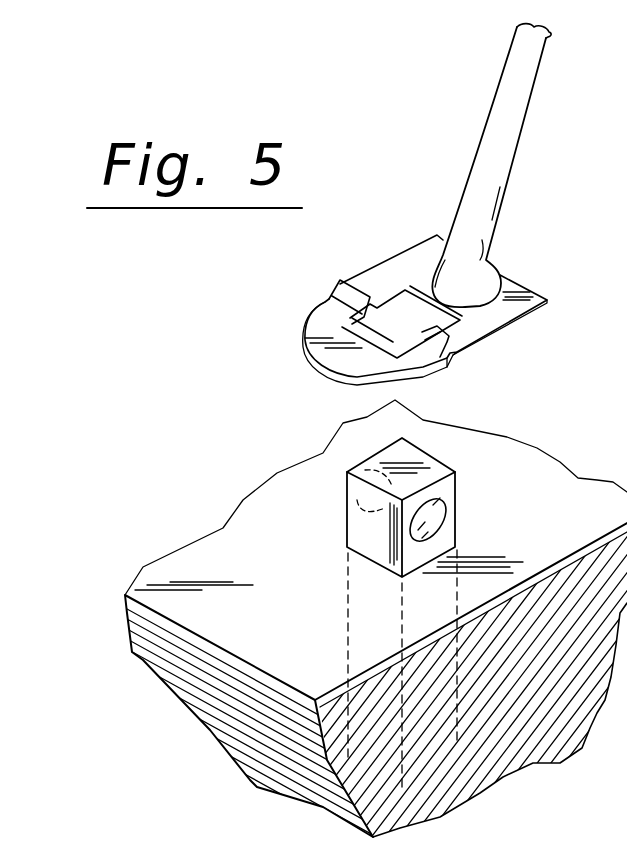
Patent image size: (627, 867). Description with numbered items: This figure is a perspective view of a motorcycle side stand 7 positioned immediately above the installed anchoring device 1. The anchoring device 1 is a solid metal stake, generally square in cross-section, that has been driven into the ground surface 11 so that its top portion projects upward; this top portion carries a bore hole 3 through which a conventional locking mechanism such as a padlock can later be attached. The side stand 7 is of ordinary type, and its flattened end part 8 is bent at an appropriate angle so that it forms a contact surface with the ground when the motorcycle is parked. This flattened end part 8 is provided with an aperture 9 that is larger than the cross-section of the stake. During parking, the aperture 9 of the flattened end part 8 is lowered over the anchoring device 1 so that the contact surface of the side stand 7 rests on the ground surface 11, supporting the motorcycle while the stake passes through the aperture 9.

The anchoring device 1 is at (450, 485).
The bore hole 3 is at (442, 517).
The side stand 7 is at (502, 148).
The flattened end part 8 is at (318, 357).
The aperture 9 is at (323, 302).
The ground surface 11 is at (258, 535).